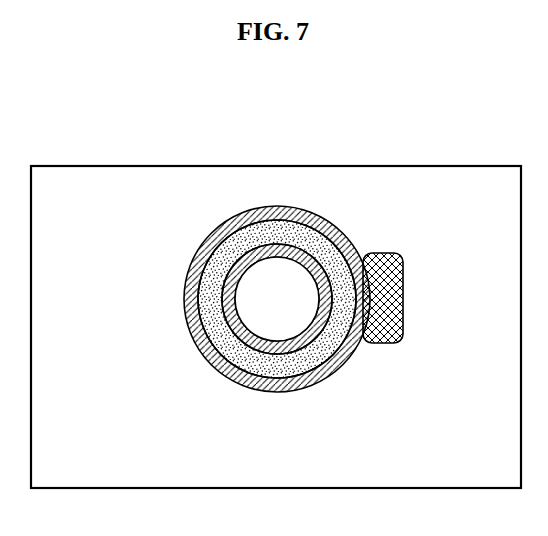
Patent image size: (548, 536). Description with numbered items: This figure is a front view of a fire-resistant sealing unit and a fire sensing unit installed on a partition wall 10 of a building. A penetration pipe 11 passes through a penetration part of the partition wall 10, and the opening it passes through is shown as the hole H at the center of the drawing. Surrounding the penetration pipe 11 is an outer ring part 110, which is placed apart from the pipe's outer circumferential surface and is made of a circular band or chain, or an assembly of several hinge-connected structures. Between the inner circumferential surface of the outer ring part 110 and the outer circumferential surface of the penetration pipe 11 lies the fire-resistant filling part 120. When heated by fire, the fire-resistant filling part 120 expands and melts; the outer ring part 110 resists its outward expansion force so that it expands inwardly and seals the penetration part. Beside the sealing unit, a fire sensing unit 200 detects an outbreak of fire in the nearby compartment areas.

The partition wall 10 is at (82, 175).
The hole H is at (265, 293).
The penetration pipe 11 is at (265, 243).
The outer ring part 110 is at (284, 211).
The fire-resistant filling part 120 is at (304, 237).
The fire sensing unit 200 is at (383, 270).